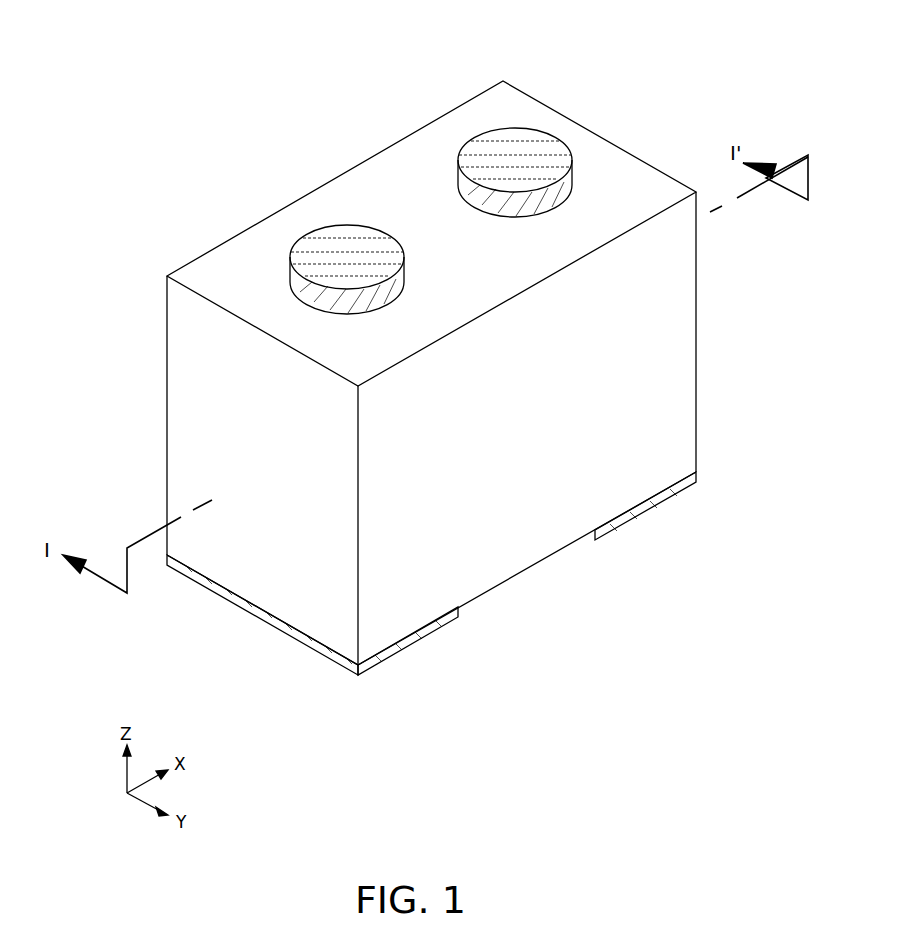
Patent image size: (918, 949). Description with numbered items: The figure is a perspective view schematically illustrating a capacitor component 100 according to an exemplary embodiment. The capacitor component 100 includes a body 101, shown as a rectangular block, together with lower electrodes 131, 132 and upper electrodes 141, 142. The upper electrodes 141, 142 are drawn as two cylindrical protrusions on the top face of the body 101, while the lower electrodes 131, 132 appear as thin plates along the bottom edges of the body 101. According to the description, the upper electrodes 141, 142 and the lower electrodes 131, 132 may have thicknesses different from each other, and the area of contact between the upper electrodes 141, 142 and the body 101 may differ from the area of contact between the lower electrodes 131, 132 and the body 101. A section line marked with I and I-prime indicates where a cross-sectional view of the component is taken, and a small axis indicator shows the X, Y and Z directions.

The capacitor component 100 is at (338, 27).
The body 101 is at (360, 180).
The lower electrode 131 is at (408, 647).
The lower electrode 132 is at (648, 512).
The upper electrode 141 is at (315, 243).
The upper electrode 142 is at (482, 145).